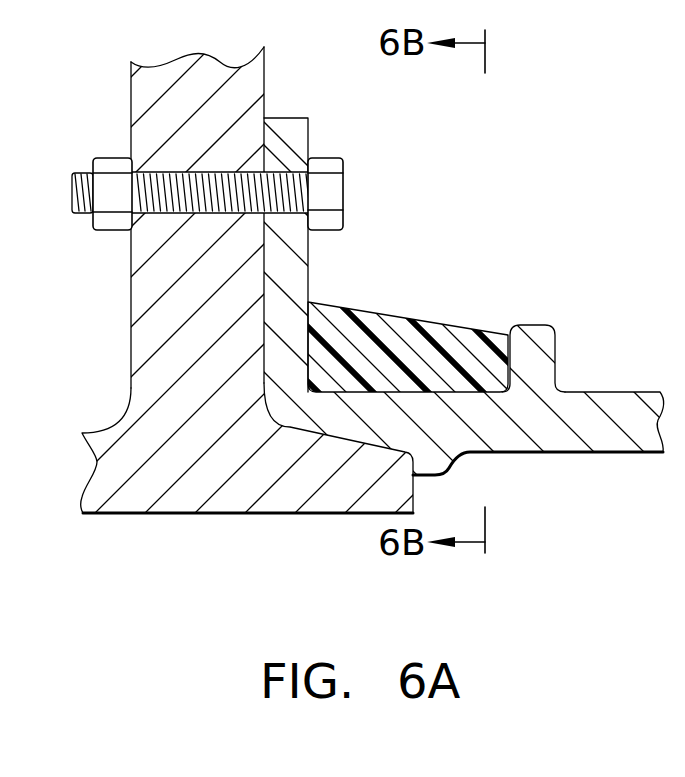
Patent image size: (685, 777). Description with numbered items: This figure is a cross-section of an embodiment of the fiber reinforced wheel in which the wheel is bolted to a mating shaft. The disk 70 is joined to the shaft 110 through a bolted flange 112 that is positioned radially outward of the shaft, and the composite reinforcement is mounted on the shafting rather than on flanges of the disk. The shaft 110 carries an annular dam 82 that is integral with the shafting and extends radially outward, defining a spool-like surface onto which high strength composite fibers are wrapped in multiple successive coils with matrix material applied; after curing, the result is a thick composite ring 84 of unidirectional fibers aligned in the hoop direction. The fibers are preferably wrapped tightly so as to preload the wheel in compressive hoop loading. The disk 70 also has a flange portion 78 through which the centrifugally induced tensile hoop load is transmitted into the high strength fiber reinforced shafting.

The wheel 70 is at (145, 86).
The flange 78 is at (186, 497).
The annular dam 82 is at (530, 350).
The composite ring 84 is at (387, 332).
The shaft 110 is at (580, 407).
The bolted flange 112 is at (292, 273).